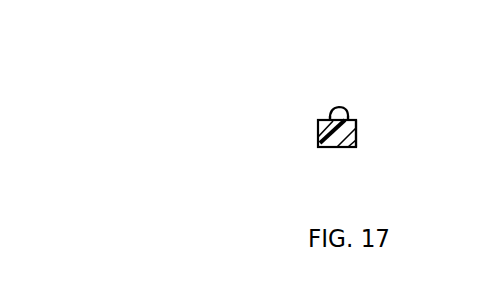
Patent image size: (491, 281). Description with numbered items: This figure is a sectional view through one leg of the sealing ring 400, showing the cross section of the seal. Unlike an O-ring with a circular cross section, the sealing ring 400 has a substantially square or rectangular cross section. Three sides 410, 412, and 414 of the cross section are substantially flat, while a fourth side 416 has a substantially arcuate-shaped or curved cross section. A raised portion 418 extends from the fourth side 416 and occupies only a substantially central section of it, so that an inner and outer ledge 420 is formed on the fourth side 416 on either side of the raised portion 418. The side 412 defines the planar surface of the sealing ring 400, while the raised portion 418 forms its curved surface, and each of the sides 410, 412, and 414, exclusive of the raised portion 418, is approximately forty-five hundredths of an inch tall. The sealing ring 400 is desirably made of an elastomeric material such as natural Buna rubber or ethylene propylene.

The sealing ring 400 is at (217, 145).
The side 410 is at (318, 128).
The side 412 is at (332, 147).
The side 414 is at (356, 132).
The fourth side 416 is at (353, 120).
The raised portion 418 is at (345, 107).
The ledge 420 is at (318, 110).